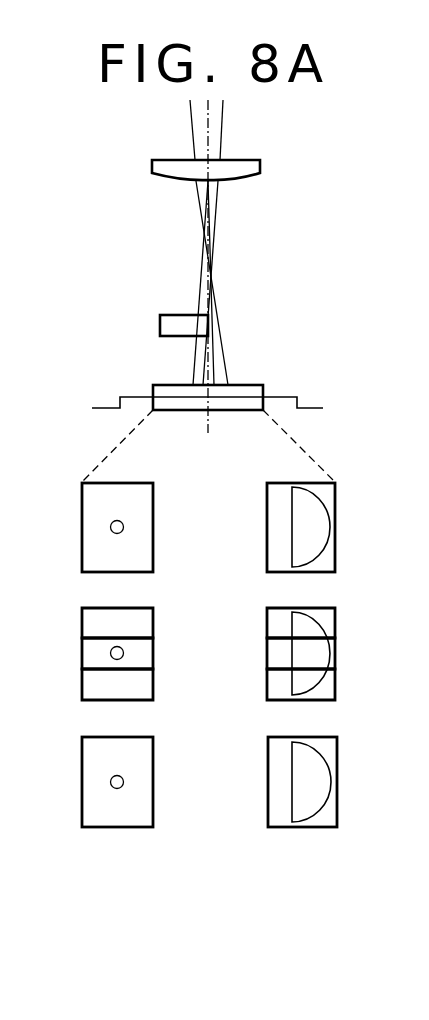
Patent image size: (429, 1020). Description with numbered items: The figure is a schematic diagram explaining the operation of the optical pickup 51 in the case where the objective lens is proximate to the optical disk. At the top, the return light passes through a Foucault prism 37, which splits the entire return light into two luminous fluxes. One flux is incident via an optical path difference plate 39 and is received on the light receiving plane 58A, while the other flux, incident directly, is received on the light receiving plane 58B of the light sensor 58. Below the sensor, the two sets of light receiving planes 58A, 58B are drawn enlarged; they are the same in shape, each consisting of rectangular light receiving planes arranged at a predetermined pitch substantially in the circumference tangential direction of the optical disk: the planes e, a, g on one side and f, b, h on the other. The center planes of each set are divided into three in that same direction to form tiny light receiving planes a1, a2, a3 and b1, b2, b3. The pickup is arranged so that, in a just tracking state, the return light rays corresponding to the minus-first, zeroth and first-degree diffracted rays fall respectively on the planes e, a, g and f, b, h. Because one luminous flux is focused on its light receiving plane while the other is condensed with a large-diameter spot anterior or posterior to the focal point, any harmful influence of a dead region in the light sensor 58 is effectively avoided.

The optical pickup 51 is at (135, 212).
The Foucault prism 37 is at (258, 163).
The optical path difference plate 39 is at (160, 327).
The light sensor 58 is at (257, 391).
The light receiving plane 58A is at (112, 677).
The light receiving plane 58B is at (325, 677).
The rectangular light receiving plane e is at (130, 527).
The rectangular light receiving plane f is at (313, 527).
The rectangular light receiving plane g is at (130, 782).
The rectangular light receiving plane h is at (298, 847).
The tiny light receiving plane a1 is at (137, 623).
The tiny light receiving plane a2 is at (137, 653).
The tiny light receiving plane a3 is at (137, 684).
The tiny light receiving plane b1 is at (322, 623).
The tiny light receiving plane b2 is at (322, 653).
The tiny light receiving plane b3 is at (322, 684).